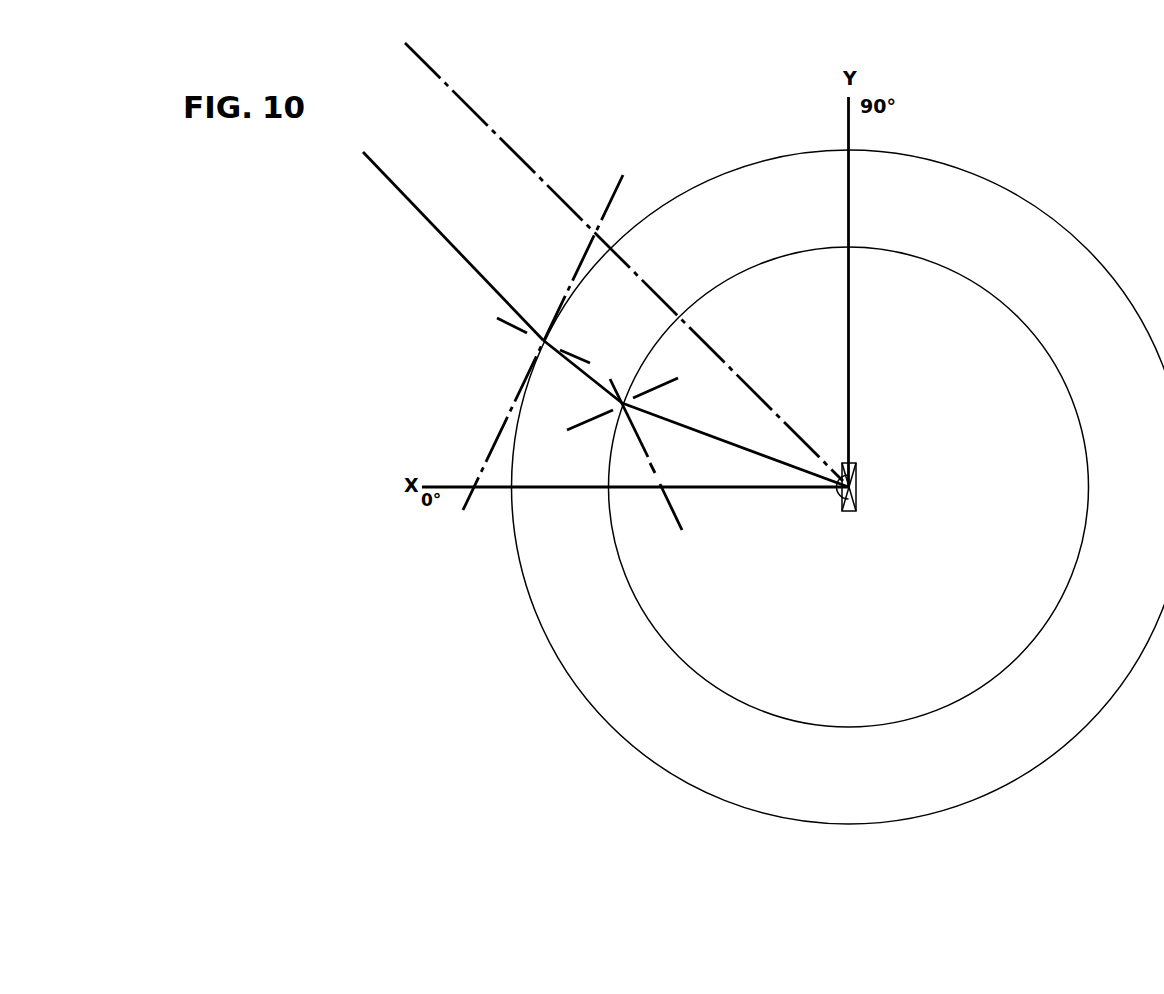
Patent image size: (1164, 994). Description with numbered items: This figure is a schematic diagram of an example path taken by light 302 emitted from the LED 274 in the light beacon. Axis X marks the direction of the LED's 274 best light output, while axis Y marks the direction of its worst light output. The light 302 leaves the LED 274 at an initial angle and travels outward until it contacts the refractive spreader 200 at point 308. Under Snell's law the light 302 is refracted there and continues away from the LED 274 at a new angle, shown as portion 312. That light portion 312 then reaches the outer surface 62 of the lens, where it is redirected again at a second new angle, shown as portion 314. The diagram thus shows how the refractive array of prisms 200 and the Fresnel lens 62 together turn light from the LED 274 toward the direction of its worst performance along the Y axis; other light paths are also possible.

The outer surface of lens 62 is at (677, 775).
The refractive spreader 200 is at (755, 707).
The LED 274 is at (856, 506).
The light 302 is at (735, 442).
The point 308 is at (620, 406).
The light portion 312 is at (580, 374).
The light portion 314 is at (432, 228).